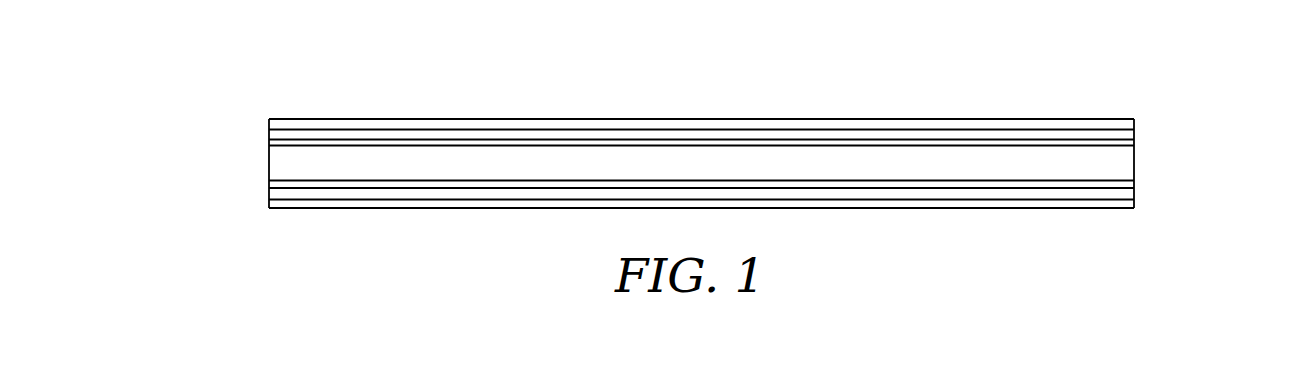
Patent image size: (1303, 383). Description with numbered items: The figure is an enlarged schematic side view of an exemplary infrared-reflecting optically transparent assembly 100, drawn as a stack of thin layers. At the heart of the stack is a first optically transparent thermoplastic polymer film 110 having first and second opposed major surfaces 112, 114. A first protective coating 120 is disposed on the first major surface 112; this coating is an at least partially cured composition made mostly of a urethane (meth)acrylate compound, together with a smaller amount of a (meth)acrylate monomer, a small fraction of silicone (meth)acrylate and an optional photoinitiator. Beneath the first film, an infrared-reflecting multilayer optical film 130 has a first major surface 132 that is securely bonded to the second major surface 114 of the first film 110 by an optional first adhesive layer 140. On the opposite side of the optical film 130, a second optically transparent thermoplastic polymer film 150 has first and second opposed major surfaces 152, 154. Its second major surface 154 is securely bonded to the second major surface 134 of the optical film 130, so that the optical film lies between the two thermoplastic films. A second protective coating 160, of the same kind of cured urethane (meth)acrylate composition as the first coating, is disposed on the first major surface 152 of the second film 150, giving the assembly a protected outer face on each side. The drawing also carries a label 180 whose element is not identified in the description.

The infrared-reflecting optically transparent assembly 100 is at (1150, 20).
The first optically transparent thermoplastic polymer film 110 is at (1135, 131).
The first major surface 112 is at (1057, 130).
The second major surface 114 is at (287, 142).
The first protective coating 120 is at (1137, 120).
The infrared-reflecting multilayer optical film 130 is at (1135, 171).
The first major surface 132 is at (512, 147).
The second major surface 134 is at (352, 183).
The first adhesive layer 140 is at (268, 146).
The second optically transparent thermoplastic polymer film 150 is at (1137, 194).
The first major surface 152 is at (300, 200).
The second major surface 154 is at (615, 184).
The second protective coating 160 is at (950, 210).
The second adhesive layer 180 is at (275, 182).